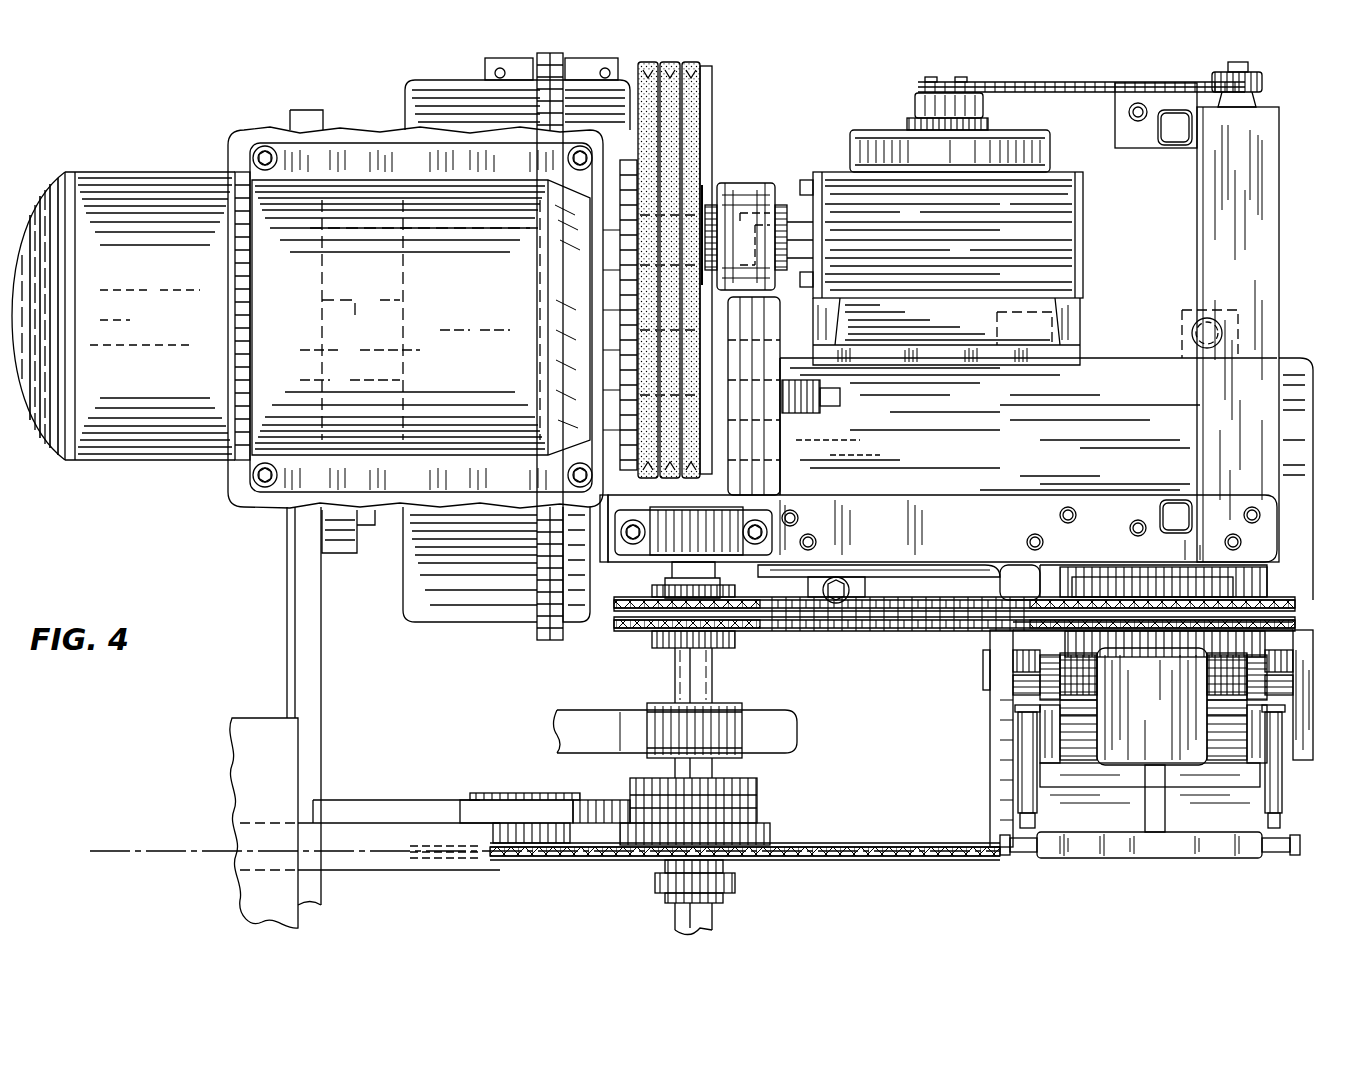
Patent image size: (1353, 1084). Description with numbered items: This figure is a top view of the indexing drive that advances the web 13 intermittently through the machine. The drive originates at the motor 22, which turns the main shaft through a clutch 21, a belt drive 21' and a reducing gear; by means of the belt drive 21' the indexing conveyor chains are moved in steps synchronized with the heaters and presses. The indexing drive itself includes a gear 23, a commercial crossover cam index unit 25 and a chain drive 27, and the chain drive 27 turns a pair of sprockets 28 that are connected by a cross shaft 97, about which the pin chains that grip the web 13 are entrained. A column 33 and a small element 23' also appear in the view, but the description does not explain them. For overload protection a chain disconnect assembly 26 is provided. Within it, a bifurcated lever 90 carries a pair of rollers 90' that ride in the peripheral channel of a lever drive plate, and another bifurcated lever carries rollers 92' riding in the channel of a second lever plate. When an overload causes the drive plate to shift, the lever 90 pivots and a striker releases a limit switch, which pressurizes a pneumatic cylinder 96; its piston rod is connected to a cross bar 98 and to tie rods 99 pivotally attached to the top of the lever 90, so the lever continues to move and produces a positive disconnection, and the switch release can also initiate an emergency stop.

The web 13 is at (193, 848).
The clutch 21 is at (772, 339).
The belt drive 21' is at (700, 270).
The motor 22 is at (480, 300).
The gear 23 is at (941, 241).
The drive knob 23' is at (1065, 90).
The crossover cam index unit 25 is at (1141, 423).
The chain disconnect assembly 26 is at (1316, 750).
The chain drive 27 is at (640, 634).
The sprockets 28 is at (858, 845).
The support column 33 is at (1254, 278).
The bifurcated lever 90 is at (1138, 663).
The rollers 90' is at (1268, 651).
The rollers 92' is at (1153, 706).
The pneumatic cylinder 96 is at (1159, 704).
The cross shaft 97 is at (716, 672).
The cross bar 98 is at (1072, 853).
The tie rods 99 is at (1020, 795).